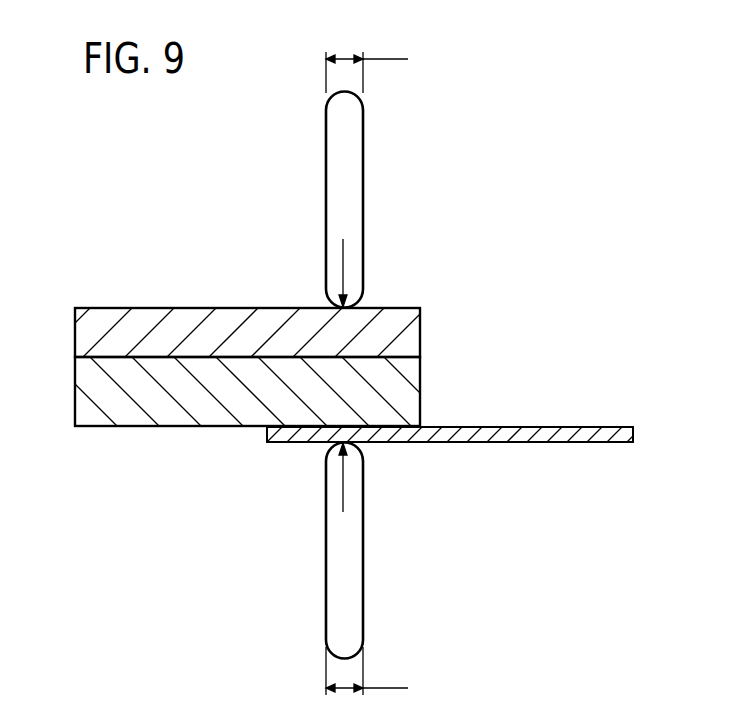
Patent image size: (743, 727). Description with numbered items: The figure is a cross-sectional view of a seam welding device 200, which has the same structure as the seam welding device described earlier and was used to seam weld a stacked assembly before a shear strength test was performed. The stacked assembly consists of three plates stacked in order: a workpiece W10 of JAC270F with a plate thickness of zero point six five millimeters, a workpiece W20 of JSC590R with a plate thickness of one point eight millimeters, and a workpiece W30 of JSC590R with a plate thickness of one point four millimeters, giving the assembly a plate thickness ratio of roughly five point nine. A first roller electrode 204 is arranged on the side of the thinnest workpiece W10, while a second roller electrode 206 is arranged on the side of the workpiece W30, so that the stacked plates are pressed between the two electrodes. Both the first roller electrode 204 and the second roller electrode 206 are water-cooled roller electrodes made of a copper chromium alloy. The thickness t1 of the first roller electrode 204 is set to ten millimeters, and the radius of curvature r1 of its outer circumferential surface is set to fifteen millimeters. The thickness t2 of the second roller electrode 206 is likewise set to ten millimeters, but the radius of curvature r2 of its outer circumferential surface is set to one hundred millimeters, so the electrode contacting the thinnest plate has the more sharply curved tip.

The seam welding device 200 is at (637, 113).
The first roller electrode 204 is at (347, 623).
The second roller electrode 206 is at (355, 192).
The workpiece W10 is at (633, 436).
The workpiece W20 is at (405, 394).
The workpiece W30 is at (405, 342).
The thickness of the first roller electrode t1 is at (367, 671).
The thickness of the second roller electrode t2 is at (367, 64).
The radius of curvature of the outer circumferential surface of the first roller ele r1 is at (345, 487).
The radius of curvature of the outer circumferential surface of the second roller el r2 is at (345, 270).